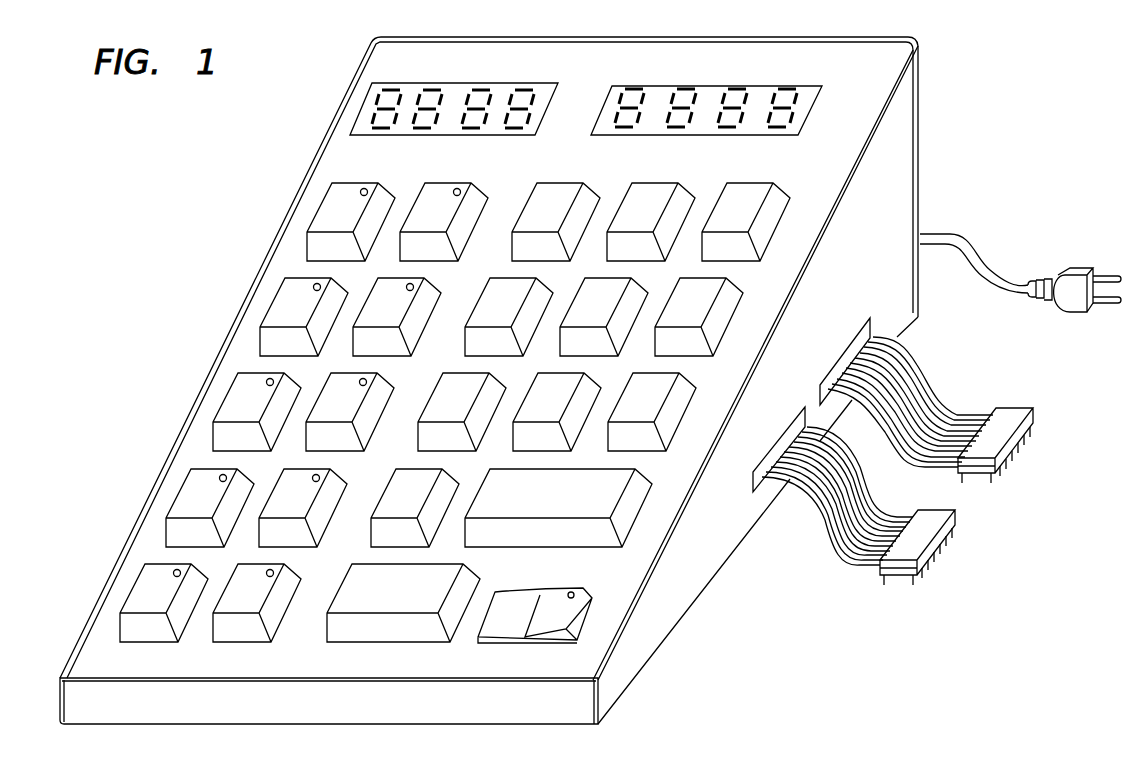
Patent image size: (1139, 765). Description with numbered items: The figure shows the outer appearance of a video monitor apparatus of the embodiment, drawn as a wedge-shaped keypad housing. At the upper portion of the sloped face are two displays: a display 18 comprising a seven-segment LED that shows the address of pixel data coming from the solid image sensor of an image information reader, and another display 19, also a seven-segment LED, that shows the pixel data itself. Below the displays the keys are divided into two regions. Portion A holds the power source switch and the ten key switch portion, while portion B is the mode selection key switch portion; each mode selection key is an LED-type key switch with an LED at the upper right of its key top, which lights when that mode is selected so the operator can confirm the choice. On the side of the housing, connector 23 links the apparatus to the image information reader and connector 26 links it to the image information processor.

The display 18 is at (455, 83).
The display 19 is at (708, 85).
The connector 23 is at (1015, 418).
The connector 26 is at (936, 520).
The portion A is at (568, 646).
The portion B is at (269, 649).